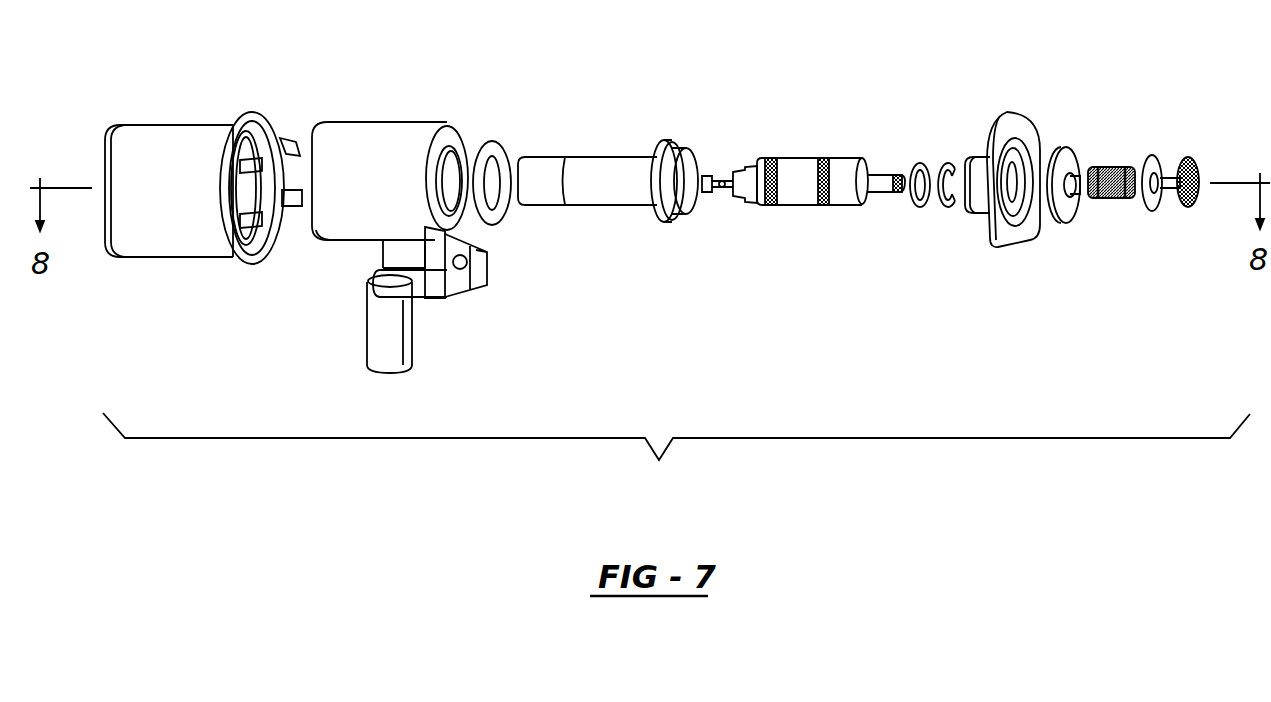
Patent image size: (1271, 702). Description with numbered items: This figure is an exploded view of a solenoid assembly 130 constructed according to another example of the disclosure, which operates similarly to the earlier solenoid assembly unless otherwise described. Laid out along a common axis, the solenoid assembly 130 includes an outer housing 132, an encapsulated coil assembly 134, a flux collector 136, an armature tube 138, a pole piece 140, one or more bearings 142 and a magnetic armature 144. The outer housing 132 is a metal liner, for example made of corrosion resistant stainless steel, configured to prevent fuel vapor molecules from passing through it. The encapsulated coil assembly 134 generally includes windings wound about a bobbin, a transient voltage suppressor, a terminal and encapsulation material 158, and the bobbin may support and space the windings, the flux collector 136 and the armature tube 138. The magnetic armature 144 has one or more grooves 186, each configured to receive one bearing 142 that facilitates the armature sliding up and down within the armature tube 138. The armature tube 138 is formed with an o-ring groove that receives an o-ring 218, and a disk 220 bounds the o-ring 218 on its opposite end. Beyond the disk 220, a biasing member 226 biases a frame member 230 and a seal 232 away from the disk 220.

The solenoid assembly 130 is at (676, 464).
The outer housing 132 is at (181, 135).
The encapsulated coil assembly 134 is at (384, 98).
The flux collector 136 is at (1008, 110).
The armature tube 138 is at (612, 172).
The pole piece 140 is at (750, 172).
The bearings 142 is at (950, 162).
The magnetic armature 144 is at (800, 172).
The encapsulation material 158 is at (335, 245).
The grooves 186 is at (762, 197).
The o-ring 218 is at (489, 140).
The disk 220 is at (1076, 152).
The biasing member 226 is at (1112, 200).
The frame member 230 is at (1150, 208).
The seal 232 is at (1196, 160).